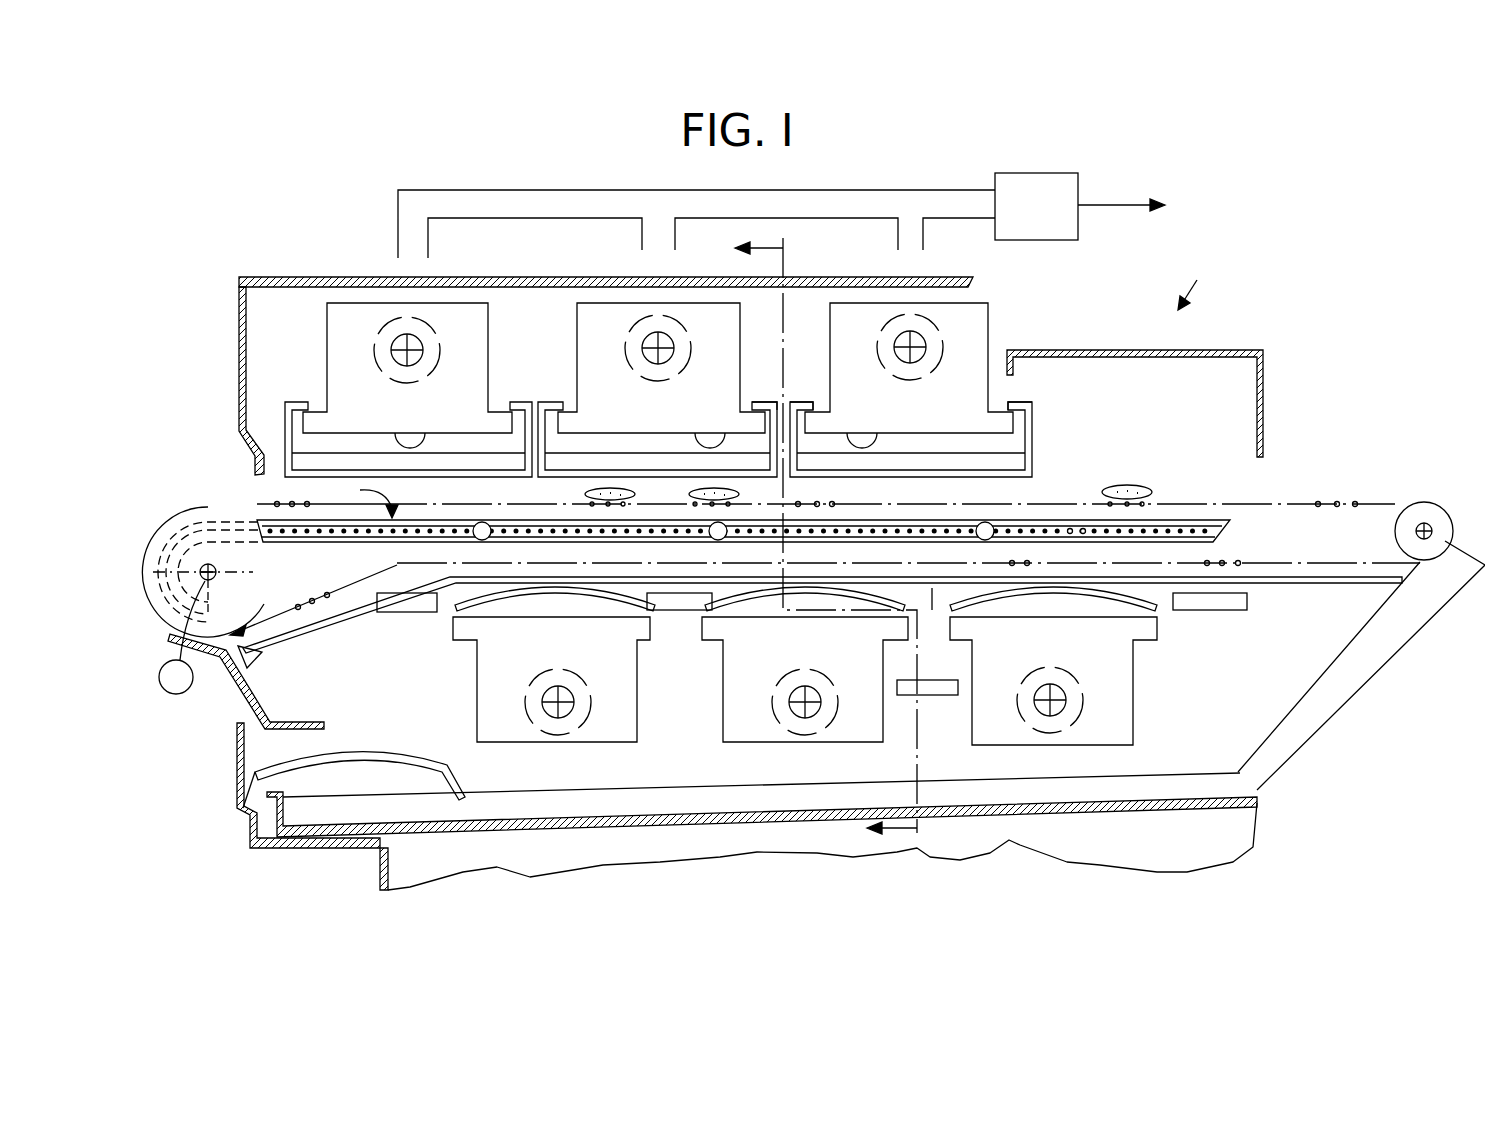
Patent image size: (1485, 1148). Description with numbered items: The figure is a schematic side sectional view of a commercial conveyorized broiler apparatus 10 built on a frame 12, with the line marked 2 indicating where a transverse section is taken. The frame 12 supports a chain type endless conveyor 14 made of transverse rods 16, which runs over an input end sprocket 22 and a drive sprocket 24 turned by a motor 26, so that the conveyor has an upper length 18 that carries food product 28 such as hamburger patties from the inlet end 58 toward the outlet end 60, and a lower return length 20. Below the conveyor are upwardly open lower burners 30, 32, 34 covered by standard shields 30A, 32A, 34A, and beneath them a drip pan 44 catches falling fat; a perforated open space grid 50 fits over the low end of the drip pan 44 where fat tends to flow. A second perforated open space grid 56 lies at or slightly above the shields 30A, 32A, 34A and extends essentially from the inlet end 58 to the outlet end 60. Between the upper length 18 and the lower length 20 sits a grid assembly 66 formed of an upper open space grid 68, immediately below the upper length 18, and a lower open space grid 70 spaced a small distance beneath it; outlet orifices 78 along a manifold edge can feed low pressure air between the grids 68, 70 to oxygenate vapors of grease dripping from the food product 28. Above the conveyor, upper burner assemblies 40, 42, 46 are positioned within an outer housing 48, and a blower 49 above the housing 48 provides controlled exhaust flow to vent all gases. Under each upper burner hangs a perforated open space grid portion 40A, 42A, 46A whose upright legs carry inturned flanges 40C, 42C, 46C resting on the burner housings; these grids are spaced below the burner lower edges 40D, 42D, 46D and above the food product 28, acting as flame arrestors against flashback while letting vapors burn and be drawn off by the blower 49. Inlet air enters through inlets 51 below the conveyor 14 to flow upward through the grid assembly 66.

The section line of FIG. 2 is at (840, 539).
The broiler apparatus 10 is at (1197, 279).
The frame 12 is at (725, 840).
The conveyor 14 is at (1352, 480).
The transverse rods 16 is at (1318, 502).
The upper length 18 is at (1205, 502).
The lower length 20 is at (1218, 565).
The input end sprocket 22 is at (1396, 527).
The drive sprocket 24 is at (256, 561).
The motor 26 is at (176, 695).
The food product 28 is at (700, 488).
The lower burner 30 is at (480, 698).
The shield 30A is at (467, 602).
The lower burner 32 is at (723, 723).
The shield 32A is at (690, 602).
The lower burner 34 is at (1118, 698).
The shield 34A is at (1157, 600).
The upper burner assembly 40 is at (492, 313).
The open space grid portion 40A is at (285, 478).
The inturned flange 40C is at (300, 402).
The lower edge 40D is at (417, 441).
The upper burner assembly 42 is at (707, 307).
The open space grid portion 42A is at (573, 468).
The inturned flange 42C is at (758, 398).
The lower edge 42D is at (707, 437).
The drip pan 44 is at (587, 827).
The upper burner assembly 46 is at (978, 325).
The open space grid portion 46A is at (930, 470).
The inturned flange 46C is at (797, 397).
The lower edge 46D is at (862, 440).
The outer housing 48 is at (372, 278).
The blower 49 is at (1055, 173).
The open space grid 50 is at (455, 764).
The inlets 51 is at (397, 605).
The open space grid 56 is at (932, 590).
The inlet end 58 is at (1325, 635).
The outlet end 60 is at (278, 604).
The open space grid assembly 66 is at (363, 498).
The upper open space grid 68 is at (476, 520).
The lower open space grid 70 is at (492, 545).
The outlet orifices 78 is at (1083, 528).